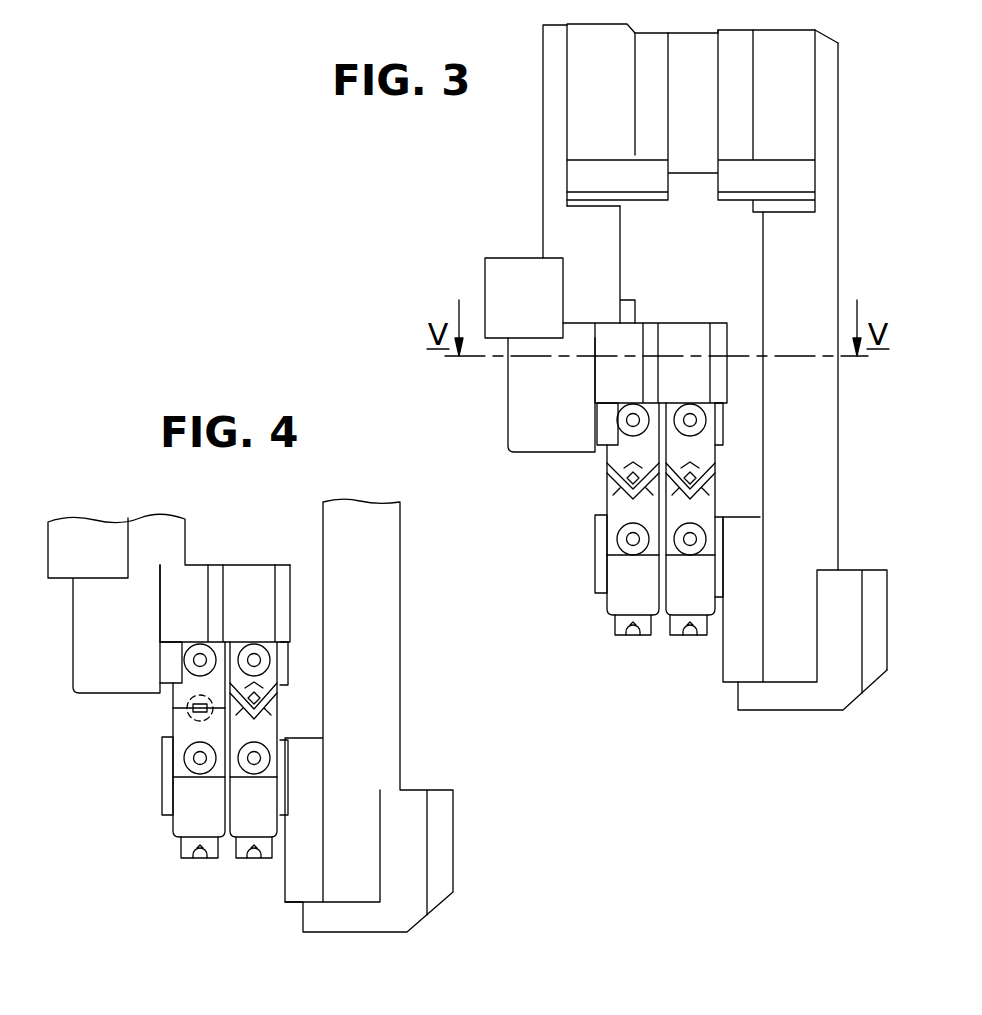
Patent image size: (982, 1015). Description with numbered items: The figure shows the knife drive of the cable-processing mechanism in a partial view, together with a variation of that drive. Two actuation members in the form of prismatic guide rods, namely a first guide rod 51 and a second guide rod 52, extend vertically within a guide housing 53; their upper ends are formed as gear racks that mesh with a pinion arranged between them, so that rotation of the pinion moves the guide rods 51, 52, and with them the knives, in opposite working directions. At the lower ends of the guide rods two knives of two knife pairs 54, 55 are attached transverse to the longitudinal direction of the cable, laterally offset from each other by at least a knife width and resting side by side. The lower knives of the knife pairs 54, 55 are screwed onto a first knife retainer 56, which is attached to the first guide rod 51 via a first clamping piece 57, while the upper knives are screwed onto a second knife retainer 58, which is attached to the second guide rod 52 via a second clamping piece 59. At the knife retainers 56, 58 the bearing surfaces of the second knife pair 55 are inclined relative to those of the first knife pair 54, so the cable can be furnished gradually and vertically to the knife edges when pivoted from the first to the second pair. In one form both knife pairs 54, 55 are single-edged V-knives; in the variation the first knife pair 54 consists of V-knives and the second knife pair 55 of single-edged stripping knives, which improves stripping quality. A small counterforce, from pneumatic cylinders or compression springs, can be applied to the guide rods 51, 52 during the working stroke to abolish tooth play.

In FIG. 3, the first guide rod 51 is at (830, 240).
In FIG. 4, the first guide rod 51 is at (390, 730).
In FIG. 3, the second guide rod 52 is at (557, 218).
In FIG. 4, the second guide rod 52 is at (157, 535).
In FIG. 3, the guide housing 53 is at (582, 122).
In FIG. 3, the first knife pair 54 is at (706, 453).
In FIG. 4, the first knife pair 54 is at (278, 680).
In FIG. 3, the second knife pair 55 is at (617, 505).
In FIG. 4, the second knife pair 55 is at (180, 730).
In FIG. 3, the first knife retainer 56 is at (730, 650).
In FIG. 3, the first clamping piece 57 is at (745, 692).
In FIG. 3, the second knife retainer 58 is at (524, 412).
In FIG. 3, the second clamping piece 59 is at (697, 338).